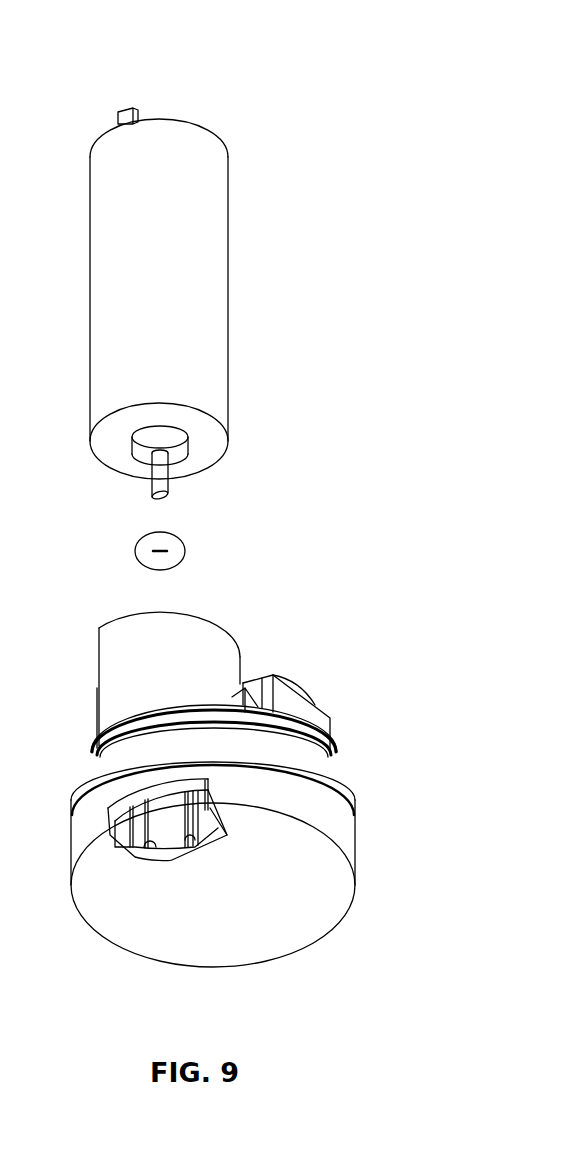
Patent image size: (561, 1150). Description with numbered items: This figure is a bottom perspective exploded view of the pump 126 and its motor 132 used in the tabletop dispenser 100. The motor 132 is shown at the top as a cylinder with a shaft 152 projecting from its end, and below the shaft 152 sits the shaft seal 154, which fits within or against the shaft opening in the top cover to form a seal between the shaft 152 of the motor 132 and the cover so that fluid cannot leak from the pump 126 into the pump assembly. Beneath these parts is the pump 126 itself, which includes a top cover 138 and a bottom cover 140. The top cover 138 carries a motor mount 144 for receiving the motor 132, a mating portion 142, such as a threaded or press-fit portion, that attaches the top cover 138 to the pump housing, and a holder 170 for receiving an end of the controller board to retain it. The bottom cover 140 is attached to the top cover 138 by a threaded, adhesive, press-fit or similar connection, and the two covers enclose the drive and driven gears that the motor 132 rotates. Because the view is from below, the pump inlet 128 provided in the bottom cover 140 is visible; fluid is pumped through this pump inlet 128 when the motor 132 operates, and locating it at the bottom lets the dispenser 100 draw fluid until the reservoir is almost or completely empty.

The tabletop dispenser 100 is at (298, 72).
The motor 132 is at (218, 272).
The shaft 152 is at (163, 474).
The shaft seal 154 is at (142, 551).
The pump 126 is at (390, 642).
The motor mount 144 is at (125, 682).
The holder 170 is at (281, 694).
The mating portion 142 is at (242, 731).
The top cover 138 is at (350, 810).
The bottom cover 140 is at (350, 853).
The pump inlet 128 is at (163, 864).